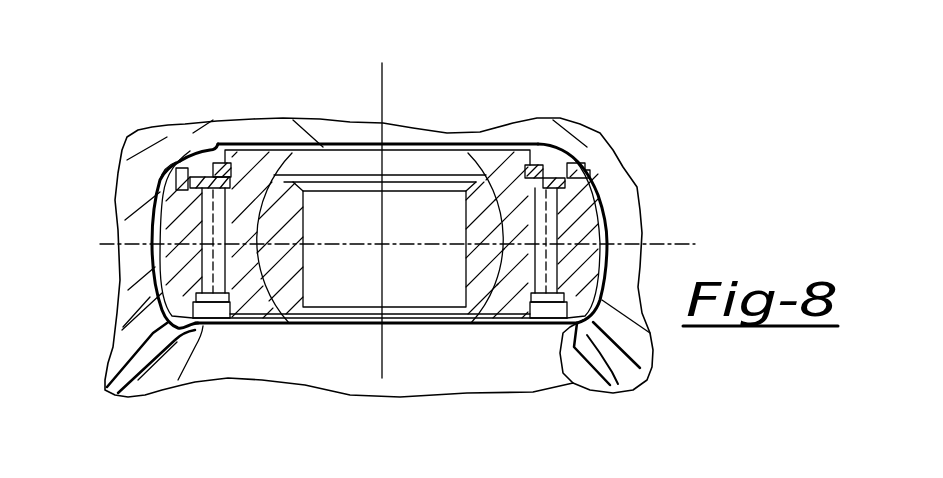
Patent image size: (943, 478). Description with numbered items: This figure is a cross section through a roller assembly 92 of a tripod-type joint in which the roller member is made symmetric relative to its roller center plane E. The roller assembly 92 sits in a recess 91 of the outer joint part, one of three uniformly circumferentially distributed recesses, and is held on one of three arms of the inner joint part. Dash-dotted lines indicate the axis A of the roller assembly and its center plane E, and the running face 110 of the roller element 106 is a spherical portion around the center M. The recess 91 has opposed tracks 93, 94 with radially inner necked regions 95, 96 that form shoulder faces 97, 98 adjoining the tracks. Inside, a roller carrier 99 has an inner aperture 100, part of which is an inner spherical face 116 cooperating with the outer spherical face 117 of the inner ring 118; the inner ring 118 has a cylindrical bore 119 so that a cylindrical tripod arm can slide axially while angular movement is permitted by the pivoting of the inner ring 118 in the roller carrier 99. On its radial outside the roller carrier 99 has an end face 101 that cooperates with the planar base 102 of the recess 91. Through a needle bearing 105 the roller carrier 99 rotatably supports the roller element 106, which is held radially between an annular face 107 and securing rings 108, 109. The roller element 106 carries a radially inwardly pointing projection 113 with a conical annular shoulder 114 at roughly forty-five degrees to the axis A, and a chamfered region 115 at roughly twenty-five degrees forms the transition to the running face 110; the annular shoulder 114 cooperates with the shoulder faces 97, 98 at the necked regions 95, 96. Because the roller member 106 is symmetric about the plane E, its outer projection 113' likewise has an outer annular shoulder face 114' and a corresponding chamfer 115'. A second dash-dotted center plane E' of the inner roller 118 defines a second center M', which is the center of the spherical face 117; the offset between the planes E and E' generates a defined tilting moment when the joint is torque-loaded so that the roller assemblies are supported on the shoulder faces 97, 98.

The recess 91 is at (195, 162).
The roller assembly 92 is at (340, 168).
The track 93 is at (180, 163).
The track 94 is at (600, 143).
The necked region 95 is at (167, 337).
The necked region 96 is at (632, 388).
The shoulder face 97 is at (167, 396).
The shoulder face 98 is at (585, 327).
The roller carrier 99 is at (290, 148).
The inner aperture 100 is at (300, 148).
The end face 101 is at (243, 175).
The planar base 102 is at (333, 147).
The needle bearing 105 is at (490, 180).
The roller element 106 is at (580, 207).
The annular face 107 is at (535, 300).
The securing ring 108 is at (538, 160).
The securing ring 109 is at (558, 163).
The running face 110 is at (607, 217).
The radially inwardly pointing projection 113 is at (201, 380).
The outer projection 113' is at (194, 122).
The annular shoulder 114 is at (129, 375).
The outer annular shoulder face 114' is at (147, 119).
The chamfered region 115 is at (115, 236).
The chamfer 115' is at (107, 155).
The inner spherical face 116 is at (292, 300).
The outer spherical face 117 is at (232, 318).
The inner ring 118 is at (475, 288).
The cylindrical bore 119 is at (465, 272).
The axis A is at (383, 116).
The center plane E is at (79, 221).
The center M is at (344, 221).
The second center plane E' is at (344, 276).
The second center M' is at (356, 310).